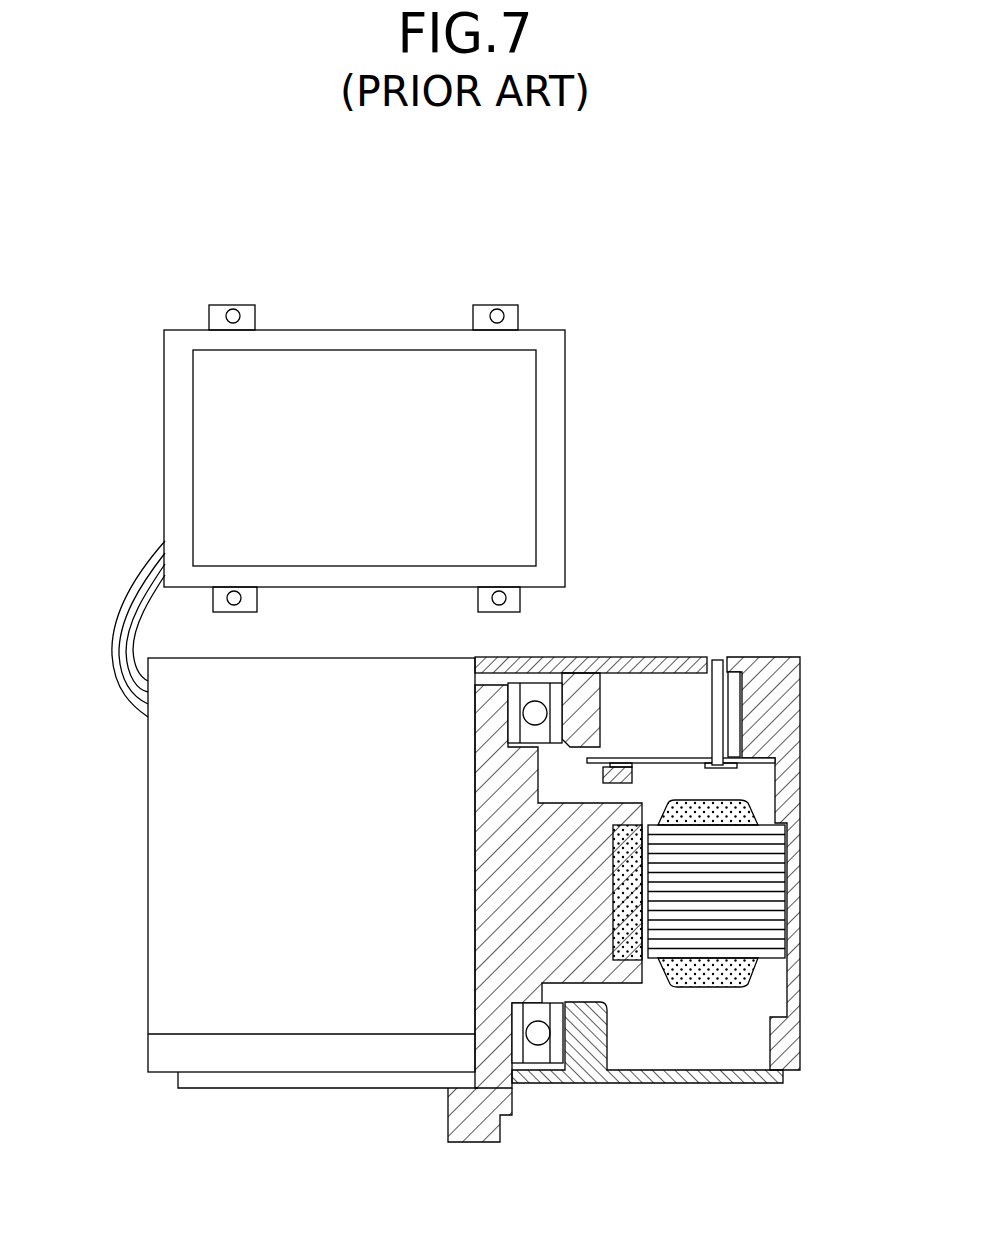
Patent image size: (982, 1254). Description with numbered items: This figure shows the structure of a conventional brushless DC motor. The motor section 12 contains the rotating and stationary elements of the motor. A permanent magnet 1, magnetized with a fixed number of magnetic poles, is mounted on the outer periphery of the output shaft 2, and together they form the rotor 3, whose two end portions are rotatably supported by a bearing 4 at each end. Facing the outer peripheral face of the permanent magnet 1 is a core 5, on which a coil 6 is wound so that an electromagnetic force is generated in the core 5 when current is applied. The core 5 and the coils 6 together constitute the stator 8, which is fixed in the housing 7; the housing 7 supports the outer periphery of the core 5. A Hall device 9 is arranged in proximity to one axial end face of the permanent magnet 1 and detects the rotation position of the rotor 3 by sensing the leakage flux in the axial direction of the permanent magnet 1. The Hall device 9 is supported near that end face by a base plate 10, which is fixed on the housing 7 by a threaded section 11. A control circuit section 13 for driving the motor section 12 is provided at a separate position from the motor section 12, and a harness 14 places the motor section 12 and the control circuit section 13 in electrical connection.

The permanent magnet 1 is at (633, 942).
The output shaft 2 is at (472, 1144).
The rotor 3 is at (632, 989).
The bearing 4 is at (540, 1052).
The core 5 is at (747, 925).
The coil 6 is at (748, 968).
The housing 7 is at (801, 707).
The stator 8 is at (753, 894).
The Hall device 9 is at (645, 760).
The base plate 10 is at (685, 757).
The threaded section 11 is at (723, 768).
The motor section 12 is at (141, 1099).
The control circuit section 13 is at (579, 300).
The harness 14 is at (108, 702).